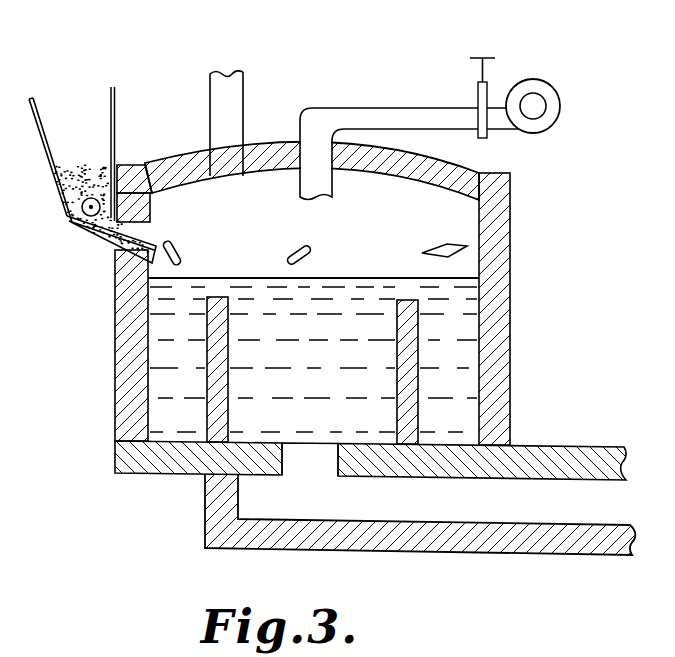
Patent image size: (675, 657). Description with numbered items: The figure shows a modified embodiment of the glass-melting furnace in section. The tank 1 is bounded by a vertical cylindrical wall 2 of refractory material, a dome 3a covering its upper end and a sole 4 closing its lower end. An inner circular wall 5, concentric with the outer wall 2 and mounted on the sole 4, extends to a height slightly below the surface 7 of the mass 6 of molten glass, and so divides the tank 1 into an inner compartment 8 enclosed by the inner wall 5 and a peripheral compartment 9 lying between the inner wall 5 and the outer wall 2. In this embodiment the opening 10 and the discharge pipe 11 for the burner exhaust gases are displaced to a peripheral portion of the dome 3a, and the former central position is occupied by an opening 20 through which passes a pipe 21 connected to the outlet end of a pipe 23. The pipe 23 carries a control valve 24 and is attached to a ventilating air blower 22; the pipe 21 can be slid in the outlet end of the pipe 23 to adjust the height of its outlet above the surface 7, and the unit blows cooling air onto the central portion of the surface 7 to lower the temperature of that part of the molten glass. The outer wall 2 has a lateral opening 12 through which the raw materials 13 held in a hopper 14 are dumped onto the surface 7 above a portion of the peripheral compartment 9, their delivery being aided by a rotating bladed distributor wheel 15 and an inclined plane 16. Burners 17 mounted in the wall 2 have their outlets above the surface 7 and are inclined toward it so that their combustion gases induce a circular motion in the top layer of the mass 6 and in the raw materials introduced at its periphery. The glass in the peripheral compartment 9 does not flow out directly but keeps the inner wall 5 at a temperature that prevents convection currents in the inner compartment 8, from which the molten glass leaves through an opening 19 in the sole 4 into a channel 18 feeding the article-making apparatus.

The tank 1 is at (336, 309).
The vertical cylindrical wall 2 is at (497, 262).
The dome 3a is at (182, 157).
The sole 4 is at (196, 471).
The inner circular wall 5 is at (221, 370).
The mass of molten glass 6 is at (313, 341).
The surface 7 is at (212, 278).
The inner compartment 8 is at (366, 269).
The peripheral compartment 9 is at (313, 359).
The opening 10 is at (221, 158).
The pipe 11 is at (223, 112).
The lateral opening 12 is at (138, 232).
The raw materials 13 is at (68, 172).
The hopper 14 is at (115, 125).
The rotating bladed distributor wheel 15 is at (82, 210).
The inclined plane 16 is at (110, 244).
The burners 17 is at (185, 248).
The channel 18 is at (534, 520).
The opening 19 is at (305, 457).
The opening 20 is at (318, 143).
The pipe 21 is at (322, 188).
The ventilating air blower 22 is at (531, 80).
The pipe 23 is at (398, 108).
The control valve 24 is at (480, 100).